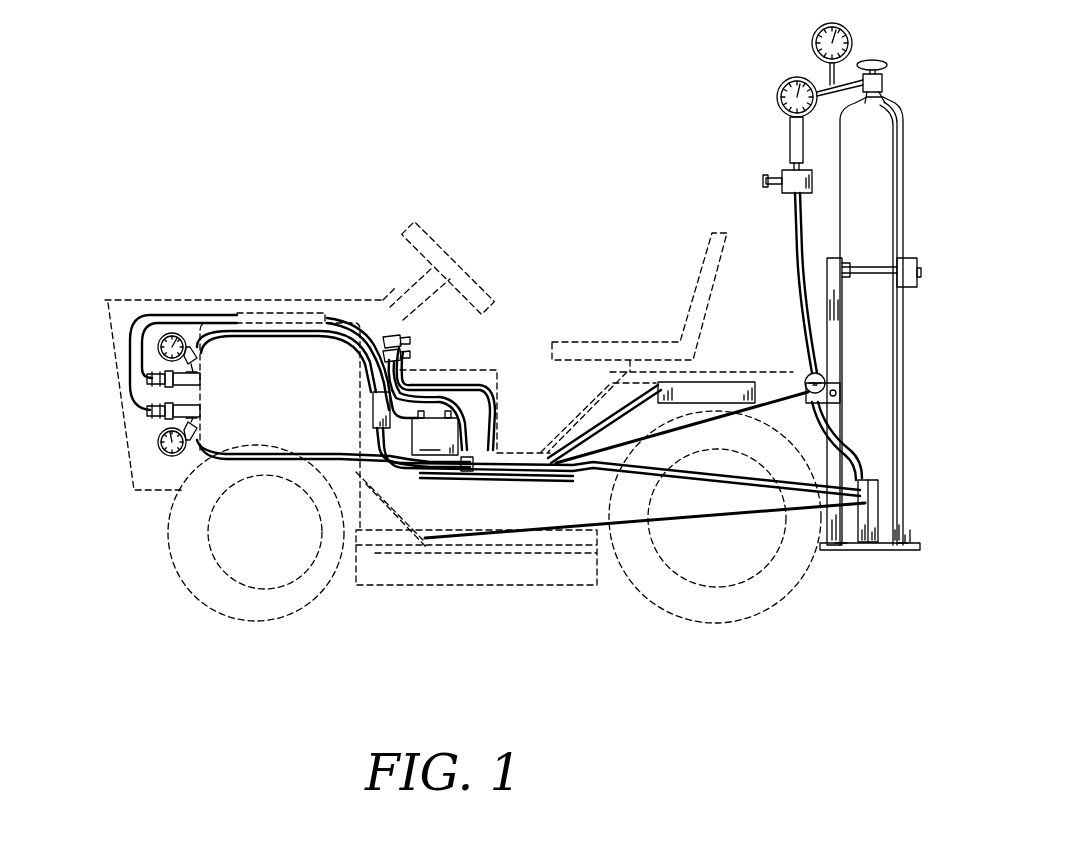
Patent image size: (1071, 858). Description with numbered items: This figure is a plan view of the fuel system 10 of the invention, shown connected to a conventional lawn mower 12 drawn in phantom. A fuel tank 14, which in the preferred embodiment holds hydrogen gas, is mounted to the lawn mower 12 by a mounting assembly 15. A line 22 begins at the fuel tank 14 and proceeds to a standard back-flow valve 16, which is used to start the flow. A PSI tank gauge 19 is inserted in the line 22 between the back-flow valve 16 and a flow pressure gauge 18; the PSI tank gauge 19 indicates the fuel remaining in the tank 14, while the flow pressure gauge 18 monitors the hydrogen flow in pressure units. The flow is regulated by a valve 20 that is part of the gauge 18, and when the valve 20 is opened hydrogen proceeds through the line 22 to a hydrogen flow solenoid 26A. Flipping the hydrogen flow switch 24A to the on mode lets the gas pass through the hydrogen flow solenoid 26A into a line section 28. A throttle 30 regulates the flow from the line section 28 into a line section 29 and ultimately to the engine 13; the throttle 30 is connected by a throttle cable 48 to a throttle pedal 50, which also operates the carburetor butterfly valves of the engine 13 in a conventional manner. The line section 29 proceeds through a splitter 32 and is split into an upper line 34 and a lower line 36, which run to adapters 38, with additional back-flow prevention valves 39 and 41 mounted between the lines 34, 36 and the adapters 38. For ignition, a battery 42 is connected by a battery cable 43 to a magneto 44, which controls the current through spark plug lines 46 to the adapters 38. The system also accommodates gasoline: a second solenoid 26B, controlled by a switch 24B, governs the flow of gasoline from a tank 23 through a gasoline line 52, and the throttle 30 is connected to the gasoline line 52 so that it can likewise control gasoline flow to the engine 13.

The fuel system 10 is at (113, 268).
The lawn mower 12 is at (373, 310).
The engine 13 is at (283, 411).
The fuel tank 14 is at (870, 163).
The mounting assembly 15 is at (838, 323).
The back-flow valve 16 is at (873, 80).
The flow pressure gauge 18 is at (793, 77).
The PSI tank gauge 19 is at (855, 5).
The valve 20 is at (790, 175).
The line 22 is at (795, 240).
The tank 23 is at (688, 387).
The hydrogen flow switch 24A is at (398, 353).
The switch 24B is at (400, 337).
The hydrogen flow solenoid 26A is at (812, 376).
The second solenoid 26B is at (467, 472).
The line section 28 is at (853, 450).
The line section 29 is at (570, 474).
The throttle 30 is at (862, 498).
The splitter 32 is at (350, 408).
The upper line 34 is at (307, 336).
The lower line 36 is at (247, 457).
The adapters 38 is at (167, 377).
The back-flow prevention valve 39 is at (187, 345).
The back-flow prevention valve 41 is at (193, 435).
The battery 42 is at (435, 433).
The battery cable 43 is at (343, 317).
The magneto 44 is at (277, 313).
The spark plug lines 46 is at (133, 322).
The throttle cable 48 is at (727, 508).
The throttle pedal 50 is at (393, 530).
The gasoline line 52 is at (613, 418).